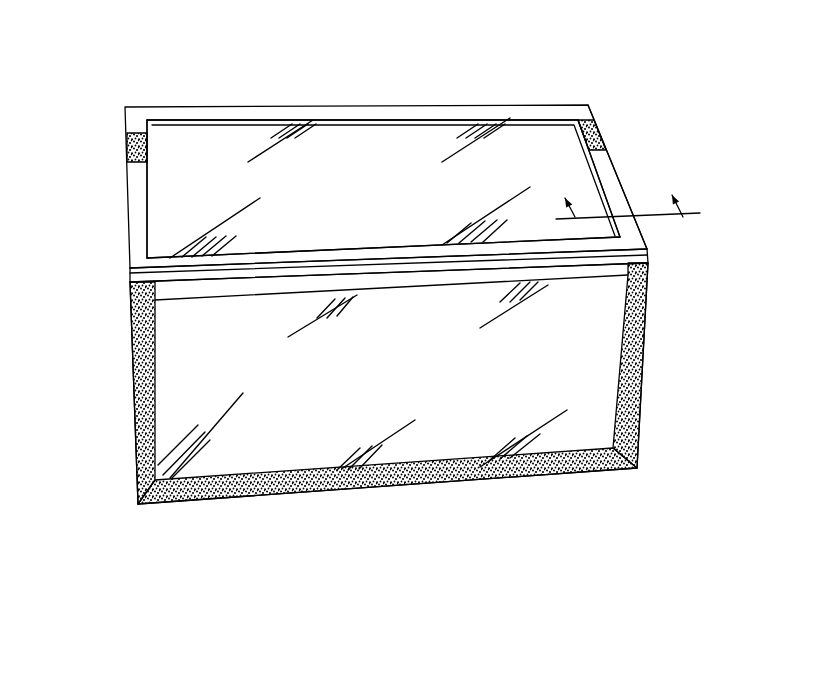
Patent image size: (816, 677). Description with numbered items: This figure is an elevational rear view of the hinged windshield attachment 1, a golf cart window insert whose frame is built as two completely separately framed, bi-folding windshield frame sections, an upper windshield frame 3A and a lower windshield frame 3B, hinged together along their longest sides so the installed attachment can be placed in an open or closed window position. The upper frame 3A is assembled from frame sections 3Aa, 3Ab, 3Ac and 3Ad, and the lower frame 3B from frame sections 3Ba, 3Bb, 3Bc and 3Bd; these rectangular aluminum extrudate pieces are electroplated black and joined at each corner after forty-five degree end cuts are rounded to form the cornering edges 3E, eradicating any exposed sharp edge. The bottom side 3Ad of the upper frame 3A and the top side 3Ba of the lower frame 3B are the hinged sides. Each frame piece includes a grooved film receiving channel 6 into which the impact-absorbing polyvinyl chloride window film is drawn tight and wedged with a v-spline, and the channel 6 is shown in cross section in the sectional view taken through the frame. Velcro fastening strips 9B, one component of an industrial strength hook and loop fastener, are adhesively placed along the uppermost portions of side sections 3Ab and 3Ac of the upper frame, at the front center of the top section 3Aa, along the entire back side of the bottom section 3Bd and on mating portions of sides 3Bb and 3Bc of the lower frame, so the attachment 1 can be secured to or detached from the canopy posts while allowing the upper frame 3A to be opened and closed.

The hinged windshield attachment 1 is at (362, 73).
The upper windshield frame 3A is at (472, 105).
The top frame section of upper frame 3Aa is at (238, 112).
The side frame section of upper frame 3Ab is at (608, 153).
The side frame section of upper frame 3Ac is at (140, 200).
The bottom frame section of upper frame 3Ad is at (168, 262).
The cornering edge 3E is at (588, 105).
The lower windshield frame 3B is at (105, 340).
The top frame section of lower frame 3Ba is at (598, 275).
The side frame section of lower frame 3Bb is at (642, 367).
The side frame section of lower frame 3Bc is at (136, 415).
The bottom frame section of lower frame 3Bd is at (275, 472).
The Velcro fastening strip 9B is at (127, 138).
The film receiving channel 6 is at (623, 196).